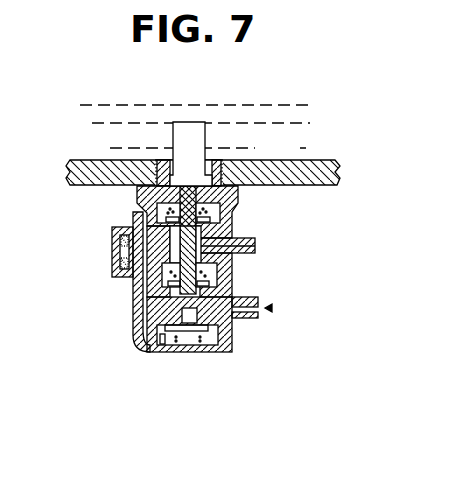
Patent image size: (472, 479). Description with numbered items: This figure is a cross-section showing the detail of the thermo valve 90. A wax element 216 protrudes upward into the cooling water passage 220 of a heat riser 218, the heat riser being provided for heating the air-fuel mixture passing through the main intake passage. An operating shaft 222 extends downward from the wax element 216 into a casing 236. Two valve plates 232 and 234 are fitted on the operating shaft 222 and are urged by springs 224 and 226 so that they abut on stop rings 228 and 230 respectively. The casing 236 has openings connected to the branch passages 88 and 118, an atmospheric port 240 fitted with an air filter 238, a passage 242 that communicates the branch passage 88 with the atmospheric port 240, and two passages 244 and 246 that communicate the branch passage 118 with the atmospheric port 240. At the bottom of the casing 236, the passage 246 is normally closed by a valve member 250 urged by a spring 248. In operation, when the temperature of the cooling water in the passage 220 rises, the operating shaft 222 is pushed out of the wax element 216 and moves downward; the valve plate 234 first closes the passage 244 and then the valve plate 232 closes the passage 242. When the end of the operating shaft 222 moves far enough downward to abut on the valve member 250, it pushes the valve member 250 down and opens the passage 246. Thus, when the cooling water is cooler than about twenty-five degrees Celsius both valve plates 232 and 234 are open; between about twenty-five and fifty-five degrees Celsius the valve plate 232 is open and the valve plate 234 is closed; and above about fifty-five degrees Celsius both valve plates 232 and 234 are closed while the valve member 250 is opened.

The wax element 216 is at (193, 121).
The heat riser 218 is at (338, 173).
The cooling water passage 220 is at (195, 128).
The operating shaft 222 is at (197, 226).
The spring 224 is at (178, 202).
The spring 226 is at (230, 273).
The stop ring 228 is at (226, 214).
The stop ring 230 is at (226, 291).
The valve plate 232 is at (152, 212).
The valve plate 234 is at (144, 315).
The casing 236 is at (232, 348).
The air filter 238 is at (118, 266).
The atmospheric port 240 is at (114, 250).
The passage 242 is at (148, 232).
The passage 244 is at (167, 276).
The passage 246 is at (160, 352).
The spring 248 is at (214, 352).
The valve member 250 is at (188, 352).
The branch passage 88 is at (258, 246).
The thermo valve 90 is at (270, 308).
The branch passage 118 is at (256, 316).